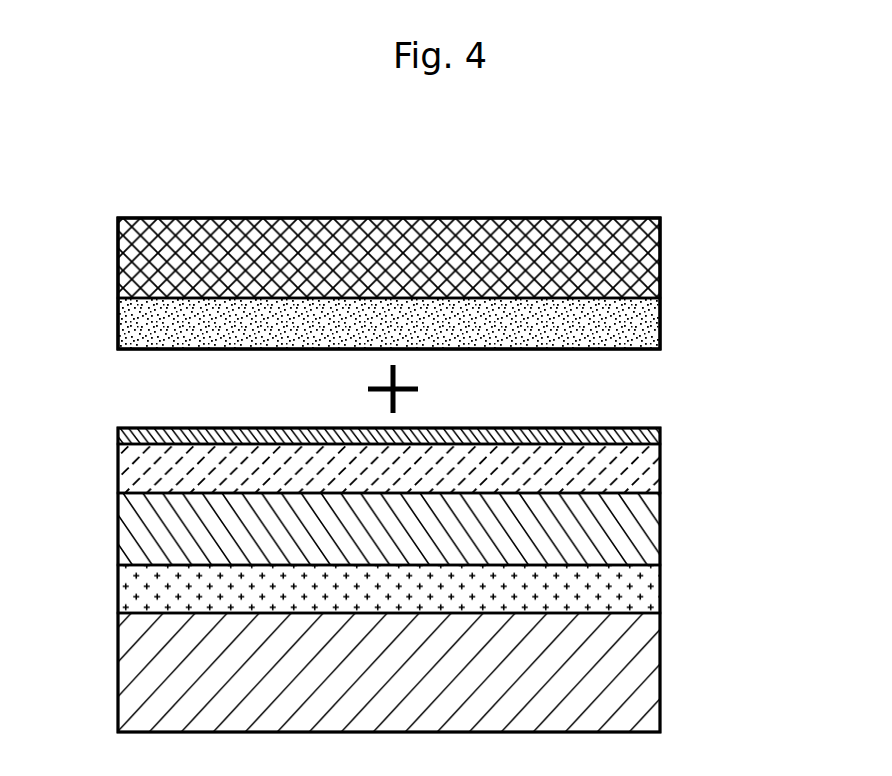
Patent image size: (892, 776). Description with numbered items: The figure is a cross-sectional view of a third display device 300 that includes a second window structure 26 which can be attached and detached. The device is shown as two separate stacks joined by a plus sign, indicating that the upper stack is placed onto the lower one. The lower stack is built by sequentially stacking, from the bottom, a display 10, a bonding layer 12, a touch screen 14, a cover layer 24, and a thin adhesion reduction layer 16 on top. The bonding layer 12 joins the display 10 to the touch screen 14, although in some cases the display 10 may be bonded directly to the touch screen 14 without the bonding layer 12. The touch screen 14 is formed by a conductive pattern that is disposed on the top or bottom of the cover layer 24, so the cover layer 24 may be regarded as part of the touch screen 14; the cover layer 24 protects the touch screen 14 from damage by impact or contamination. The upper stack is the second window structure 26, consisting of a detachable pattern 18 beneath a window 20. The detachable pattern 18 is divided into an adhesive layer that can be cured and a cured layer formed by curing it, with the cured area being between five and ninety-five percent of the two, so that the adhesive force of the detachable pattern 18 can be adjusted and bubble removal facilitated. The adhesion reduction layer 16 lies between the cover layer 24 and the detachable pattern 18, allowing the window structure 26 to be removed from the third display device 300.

The third display device 300 is at (143, 150).
The second window structure 26 is at (728, 252).
The window 20 is at (652, 260).
The detachable pattern 18 is at (650, 332).
The adhesion reduction layer 16 is at (654, 438).
The cover layer 24 is at (652, 466).
The touch screen 14 is at (652, 527).
The bonding layer 12 is at (652, 583).
The display 10 is at (652, 674).